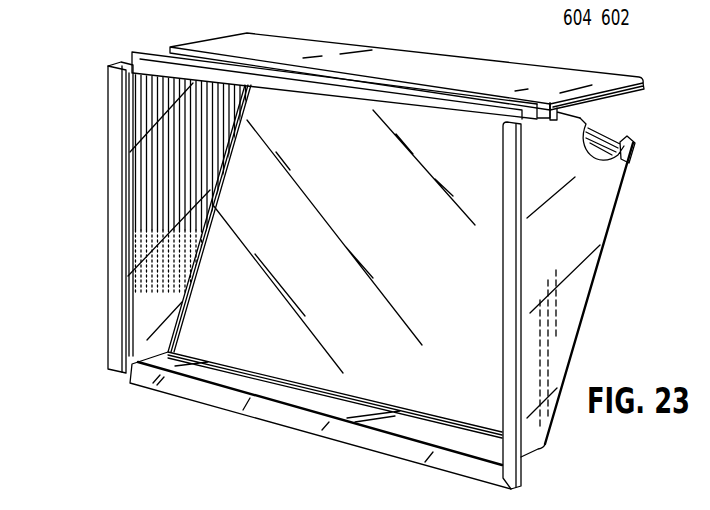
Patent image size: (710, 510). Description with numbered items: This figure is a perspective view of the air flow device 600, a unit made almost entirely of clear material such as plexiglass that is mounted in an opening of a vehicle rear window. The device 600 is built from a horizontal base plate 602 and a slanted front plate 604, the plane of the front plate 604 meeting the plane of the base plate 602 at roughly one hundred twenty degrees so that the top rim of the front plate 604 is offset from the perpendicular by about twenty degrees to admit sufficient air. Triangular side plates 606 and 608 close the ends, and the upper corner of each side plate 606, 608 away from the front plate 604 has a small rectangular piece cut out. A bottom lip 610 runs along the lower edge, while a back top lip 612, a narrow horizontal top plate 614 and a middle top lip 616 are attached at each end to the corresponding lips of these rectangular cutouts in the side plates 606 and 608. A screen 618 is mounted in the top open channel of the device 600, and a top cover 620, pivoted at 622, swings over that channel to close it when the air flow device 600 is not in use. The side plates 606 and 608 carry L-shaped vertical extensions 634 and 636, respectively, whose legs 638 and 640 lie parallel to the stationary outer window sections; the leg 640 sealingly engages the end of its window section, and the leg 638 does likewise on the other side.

The air flow device 600 is at (612, 248).
The horizontal base plate 602 is at (308, 397).
The front plate 604 is at (240, 348).
The side plate 606 is at (128, 277).
The side plate 608 is at (565, 345).
The bottom lip 610 is at (368, 442).
The back top lip 612 is at (149, 64).
The narrow horizontal top plate 614 is at (532, 117).
The middle top lip 616 is at (640, 84).
The screen 618 is at (603, 134).
The top cover 620 is at (321, 47).
The pivot 622 is at (561, 122).
The L-shaped vertical extension 634 is at (102, 210).
The L-shaped vertical extension 636 is at (530, 297).
The leg 638 is at (115, 146).
The leg 640 is at (512, 250).